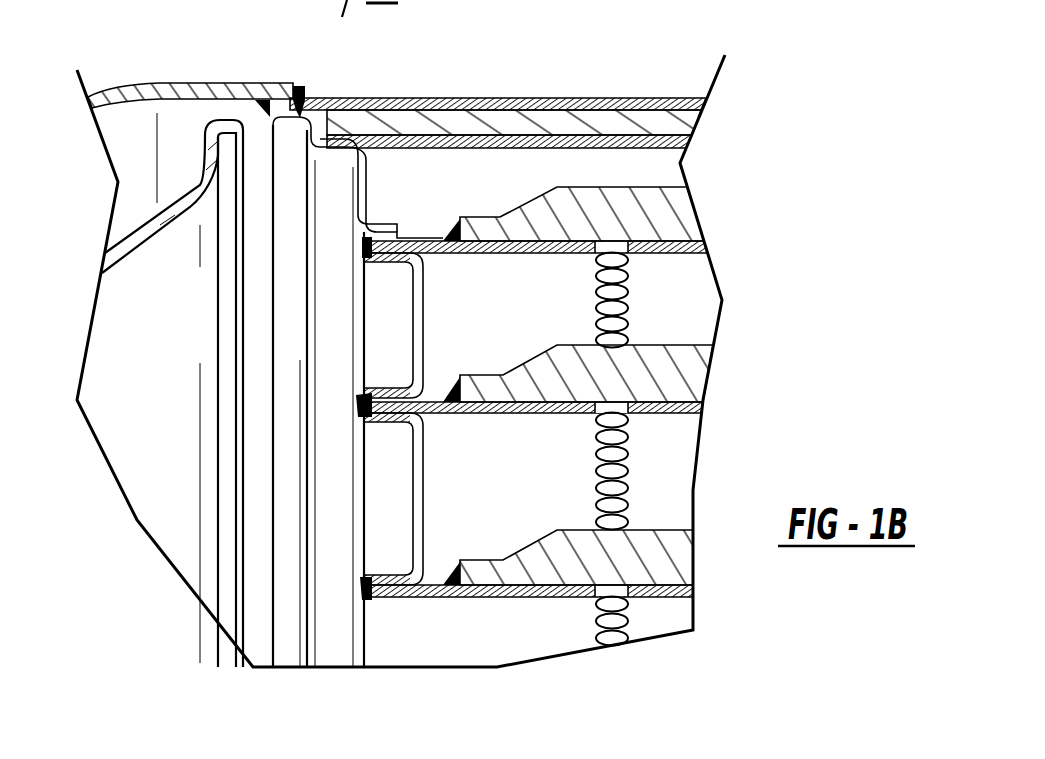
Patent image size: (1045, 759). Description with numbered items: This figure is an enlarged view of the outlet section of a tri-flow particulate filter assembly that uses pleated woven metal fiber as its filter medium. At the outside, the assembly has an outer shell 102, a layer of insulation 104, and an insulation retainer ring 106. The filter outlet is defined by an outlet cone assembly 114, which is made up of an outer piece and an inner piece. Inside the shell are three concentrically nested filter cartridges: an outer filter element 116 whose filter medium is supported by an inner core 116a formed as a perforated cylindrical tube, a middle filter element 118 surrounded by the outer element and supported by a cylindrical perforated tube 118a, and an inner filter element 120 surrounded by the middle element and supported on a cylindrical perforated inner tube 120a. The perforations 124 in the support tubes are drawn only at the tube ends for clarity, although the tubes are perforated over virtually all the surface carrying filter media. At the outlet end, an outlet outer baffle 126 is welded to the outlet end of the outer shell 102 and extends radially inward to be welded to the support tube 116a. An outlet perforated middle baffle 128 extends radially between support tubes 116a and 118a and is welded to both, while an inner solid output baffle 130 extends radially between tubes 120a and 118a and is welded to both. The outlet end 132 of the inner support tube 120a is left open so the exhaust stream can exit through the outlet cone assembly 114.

The outer shell 102 is at (583, 97).
The layer of insulation 104 is at (418, 123).
The insulation retainer ring 106 is at (410, 150).
The outlet cone assembly 114 is at (128, 120).
The outer filter element 116 is at (677, 207).
The inner core 116a is at (468, 245).
The middle filter element 118 is at (697, 368).
The cylindrical perforated tube 118a is at (487, 404).
The inner filter element 120 is at (660, 555).
The cylindrical perforated inner tube 120a is at (523, 597).
The perforations 124 is at (612, 292).
The outlet outer baffle 126 is at (315, 157).
The outlet perforated middle baffle 128 is at (385, 258).
The inner solid output baffle 130 is at (412, 502).
The outlet end 132 is at (368, 642).